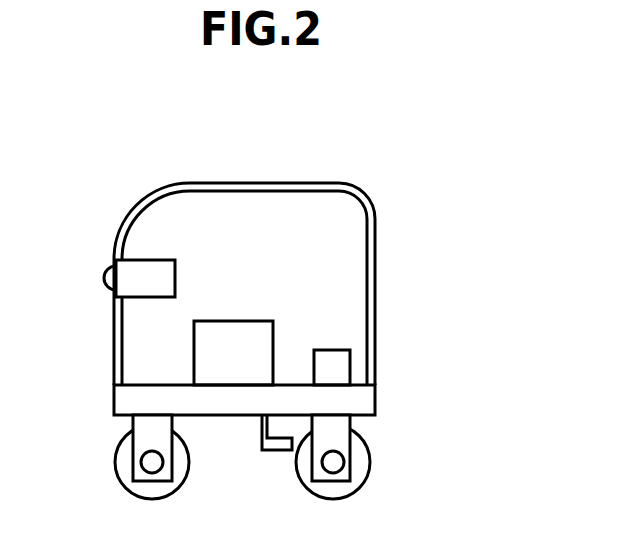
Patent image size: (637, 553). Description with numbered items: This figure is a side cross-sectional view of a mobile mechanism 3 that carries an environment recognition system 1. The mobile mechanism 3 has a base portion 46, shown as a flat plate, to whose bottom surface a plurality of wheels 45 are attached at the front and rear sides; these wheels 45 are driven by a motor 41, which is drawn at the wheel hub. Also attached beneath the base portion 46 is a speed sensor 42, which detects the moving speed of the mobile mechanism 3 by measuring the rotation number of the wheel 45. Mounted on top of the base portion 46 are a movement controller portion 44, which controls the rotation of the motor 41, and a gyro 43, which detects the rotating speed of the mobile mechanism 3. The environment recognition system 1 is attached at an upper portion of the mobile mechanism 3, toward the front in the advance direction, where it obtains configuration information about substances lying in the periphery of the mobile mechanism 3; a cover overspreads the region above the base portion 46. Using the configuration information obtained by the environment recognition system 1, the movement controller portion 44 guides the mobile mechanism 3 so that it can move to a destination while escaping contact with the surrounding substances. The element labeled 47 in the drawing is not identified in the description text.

The environment recognition system 1 is at (160, 260).
The mobile mechanism 3 is at (378, 167).
The motor 41 is at (336, 458).
The speed sensor 42 is at (272, 451).
The gyro 43 is at (330, 350).
The movement controller portion 44 is at (250, 321).
The wheels 45 is at (358, 464).
The base portion 46 is at (128, 400).
The sensor unit 47 is at (124, 221).